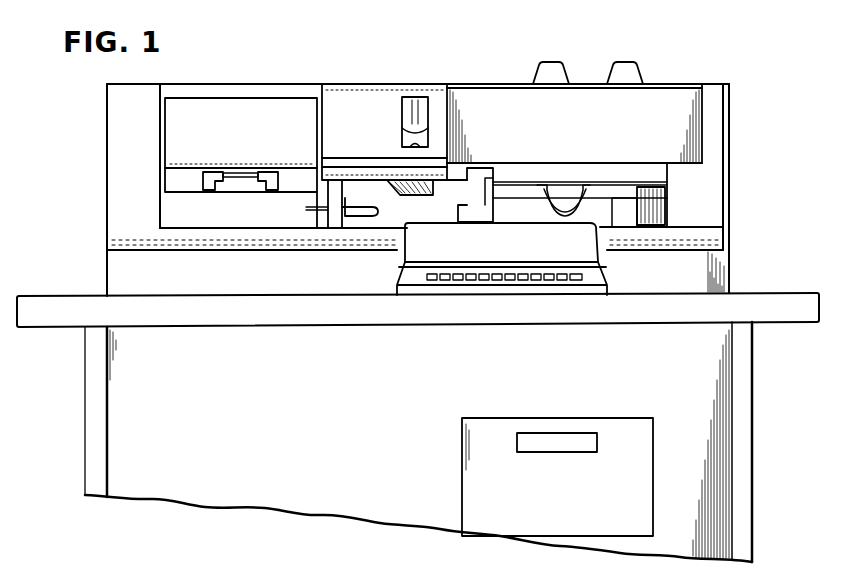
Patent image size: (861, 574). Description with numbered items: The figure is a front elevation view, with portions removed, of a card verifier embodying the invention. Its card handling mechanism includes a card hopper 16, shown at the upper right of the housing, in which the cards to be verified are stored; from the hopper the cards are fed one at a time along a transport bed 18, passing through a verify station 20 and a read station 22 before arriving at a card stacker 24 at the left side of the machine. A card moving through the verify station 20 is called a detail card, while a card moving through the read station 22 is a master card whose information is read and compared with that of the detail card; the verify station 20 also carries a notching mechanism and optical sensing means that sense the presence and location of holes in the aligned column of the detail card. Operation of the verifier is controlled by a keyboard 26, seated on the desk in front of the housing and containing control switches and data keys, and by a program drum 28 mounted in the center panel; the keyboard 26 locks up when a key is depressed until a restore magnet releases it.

The card hopper 16 is at (588, 78).
The transport bed 18 is at (628, 216).
The verify station 20 is at (479, 170).
The read station 22 is at (335, 183).
The card stacker 24 is at (280, 99).
The keyboard 26 is at (590, 272).
The program drum 28 is at (413, 105).